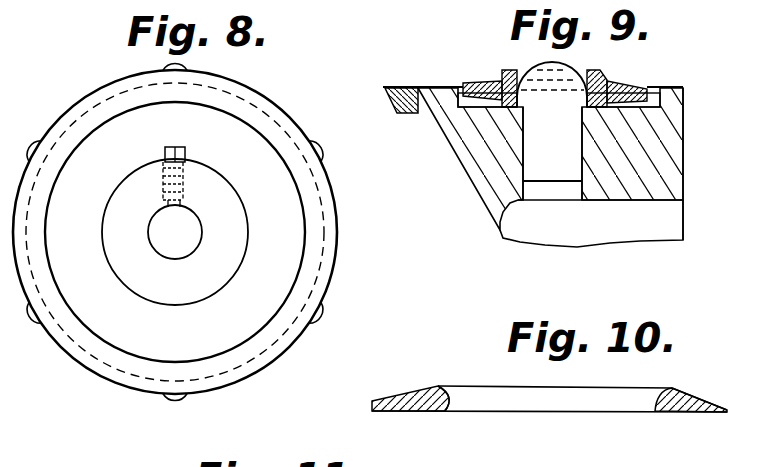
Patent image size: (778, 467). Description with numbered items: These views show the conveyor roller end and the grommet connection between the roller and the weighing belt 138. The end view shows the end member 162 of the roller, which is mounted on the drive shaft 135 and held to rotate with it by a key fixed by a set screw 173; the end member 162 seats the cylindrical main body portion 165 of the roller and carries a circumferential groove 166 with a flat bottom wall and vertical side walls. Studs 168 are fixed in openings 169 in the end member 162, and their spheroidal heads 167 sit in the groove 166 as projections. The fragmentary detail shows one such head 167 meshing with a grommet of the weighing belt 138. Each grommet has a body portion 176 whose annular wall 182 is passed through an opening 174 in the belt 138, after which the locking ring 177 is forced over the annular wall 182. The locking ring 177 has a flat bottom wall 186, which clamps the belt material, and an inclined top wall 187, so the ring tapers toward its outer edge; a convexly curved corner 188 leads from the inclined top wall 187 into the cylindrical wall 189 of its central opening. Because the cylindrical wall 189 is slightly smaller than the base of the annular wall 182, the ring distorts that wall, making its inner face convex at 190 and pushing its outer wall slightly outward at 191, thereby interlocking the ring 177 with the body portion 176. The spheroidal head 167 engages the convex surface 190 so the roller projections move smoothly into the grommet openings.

In FIG. 8, the drive shaft 135 is at (196, 238).
In FIG. 9, the weighing belt 138 is at (398, 86).
In FIG. 8, the end member 162 is at (313, 229).
In FIG. 9, the end member 162 is at (667, 153).
In FIG. 9, the cylindrical main body portion 165 is at (398, 110).
In FIG. 9, the circumferential groove 166 is at (686, 104).
In FIG. 8, the spheroidal head 167 is at (188, 66).
In FIG. 9, the spheroidal head 167 is at (537, 70).
In FIG. 9, the stud 168 is at (545, 170).
In FIG. 9, the opening 169 is at (572, 193).
In FIG. 8, the set screw 173 is at (185, 182).
In FIG. 9, the opening 174 is at (497, 90).
In FIG. 9, the body portion 176 is at (493, 105).
In FIG. 9, the locking ring 177 is at (622, 82).
In FIG. 10, the locking ring 177 is at (566, 413).
In FIG. 9, the annular wall 182 is at (502, 83).
In FIG. 10, the flat bottom wall 186 is at (673, 415).
In FIG. 10, the inclined top wall 187 is at (686, 393).
In FIG. 10, the convexly curved corner 188 is at (450, 388).
In FIG. 10, the cylindrical wall 189 is at (455, 408).
In FIG. 9, the convex surface 190 is at (543, 93).
In FIG. 9, the outwardly projected outer wall portion 191 is at (601, 68).